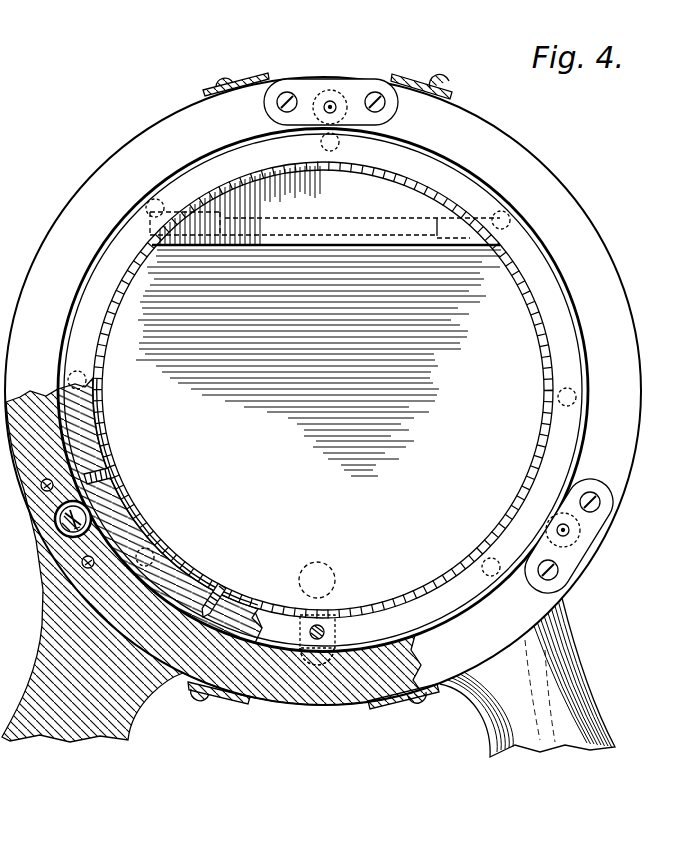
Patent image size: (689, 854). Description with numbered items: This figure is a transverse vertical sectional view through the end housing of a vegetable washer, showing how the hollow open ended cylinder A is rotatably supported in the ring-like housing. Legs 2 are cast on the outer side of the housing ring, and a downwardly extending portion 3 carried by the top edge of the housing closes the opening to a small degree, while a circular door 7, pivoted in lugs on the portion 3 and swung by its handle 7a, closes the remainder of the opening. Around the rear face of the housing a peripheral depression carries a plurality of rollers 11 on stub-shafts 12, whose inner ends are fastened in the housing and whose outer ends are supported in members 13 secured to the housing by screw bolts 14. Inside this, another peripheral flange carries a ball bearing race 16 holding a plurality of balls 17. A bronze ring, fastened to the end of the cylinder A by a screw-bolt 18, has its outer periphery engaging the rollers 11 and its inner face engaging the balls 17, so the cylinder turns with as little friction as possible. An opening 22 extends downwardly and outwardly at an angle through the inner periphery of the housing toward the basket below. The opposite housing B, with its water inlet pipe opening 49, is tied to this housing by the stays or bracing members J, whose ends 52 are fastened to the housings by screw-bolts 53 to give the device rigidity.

The legs 2 is at (40, 697).
The downwardly extending portion 3 is at (325, 205).
The door 7 is at (318, 360).
The handle 7a is at (322, 566).
The rollers 11 is at (329, 91).
The stub-shafts 12 is at (332, 105).
The member 13 is at (300, 78).
The screw bolts 14 is at (286, 91).
The ball bearing race 16 is at (267, 622).
The balls 17 is at (88, 380).
The screw-bolt 18 is at (216, 592).
The opening 22 is at (321, 664).
The water inlet pipe opening 49 is at (7, 242).
The ends 52 is at (202, 91).
The screw-bolts 53 is at (217, 76).
The hollow open ended cylinder A is at (104, 333).
The housing B is at (323, 391).
The stays or connecting bracing members J is at (243, 79).